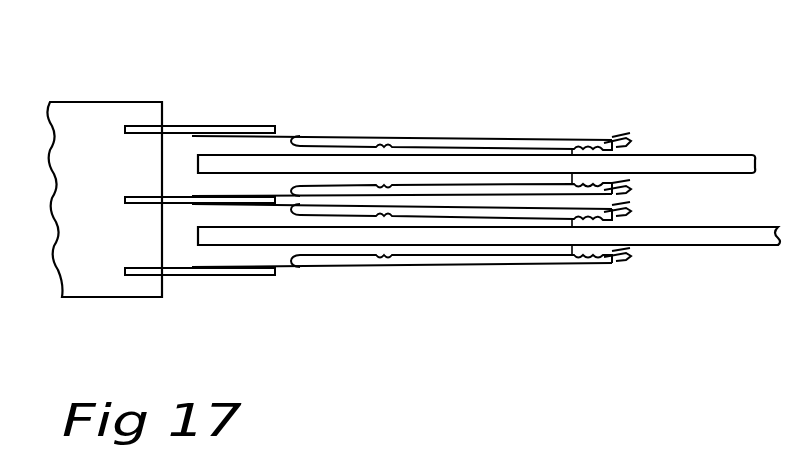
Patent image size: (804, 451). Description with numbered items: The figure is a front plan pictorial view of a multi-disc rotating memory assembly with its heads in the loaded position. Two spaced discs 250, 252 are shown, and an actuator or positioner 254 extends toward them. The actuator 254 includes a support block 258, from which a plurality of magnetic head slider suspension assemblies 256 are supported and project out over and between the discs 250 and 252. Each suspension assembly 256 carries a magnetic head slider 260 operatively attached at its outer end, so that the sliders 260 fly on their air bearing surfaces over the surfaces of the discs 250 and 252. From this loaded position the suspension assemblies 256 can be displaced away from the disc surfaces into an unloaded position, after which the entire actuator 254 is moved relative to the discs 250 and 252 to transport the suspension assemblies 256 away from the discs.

The disc 250 is at (693, 157).
The disc 252 is at (747, 246).
The actuator 254 is at (118, 96).
The magnetic head slider suspension assembly 256 is at (441, 143).
The support block 258 is at (116, 289).
The magnetic head slider 260 is at (620, 140).